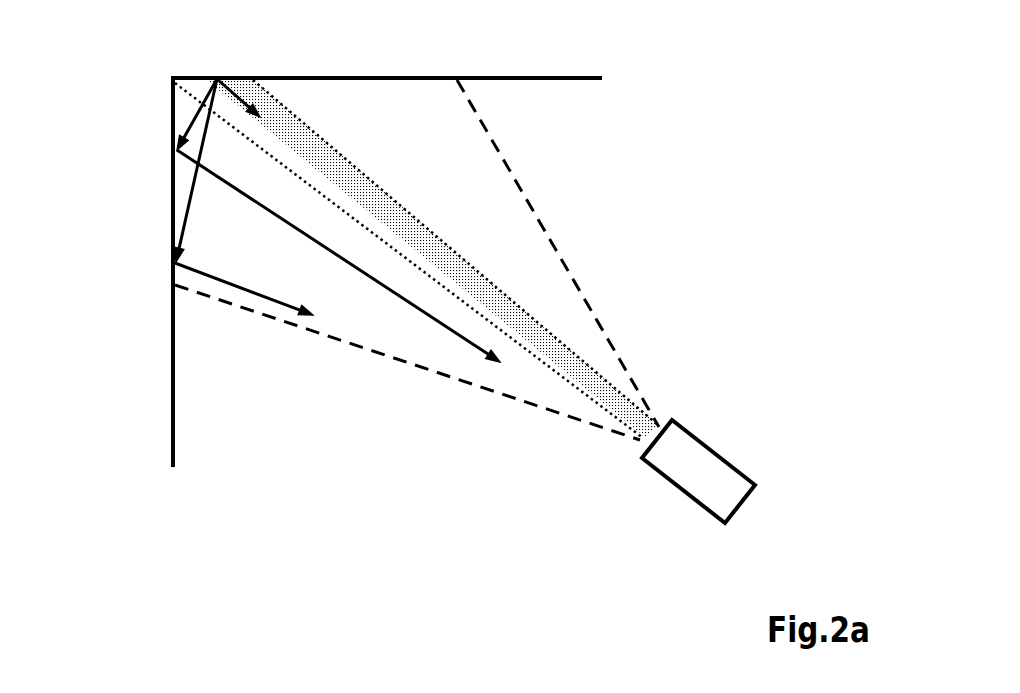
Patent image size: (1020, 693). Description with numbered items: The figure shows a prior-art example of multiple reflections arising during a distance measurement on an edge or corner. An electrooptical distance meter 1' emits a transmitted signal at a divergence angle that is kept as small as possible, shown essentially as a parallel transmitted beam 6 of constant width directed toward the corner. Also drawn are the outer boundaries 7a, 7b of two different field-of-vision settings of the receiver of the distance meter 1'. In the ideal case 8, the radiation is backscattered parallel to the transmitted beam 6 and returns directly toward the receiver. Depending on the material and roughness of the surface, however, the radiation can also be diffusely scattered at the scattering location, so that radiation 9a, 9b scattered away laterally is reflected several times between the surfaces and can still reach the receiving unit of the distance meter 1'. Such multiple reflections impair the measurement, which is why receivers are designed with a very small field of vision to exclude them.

The ideal case backscatter 8 is at (517, 61).
The transmitted beam 6 is at (496, 258).
The outer boundary of first field of vision setting 7a is at (545, 252).
The outer boundary of second field of vision setting 7b is at (647, 253).
The laterally scattered radiation 9a is at (276, 204).
The laterally scattered radiation 9b is at (346, 259).
The electrooptical distance meter 1' is at (735, 436).